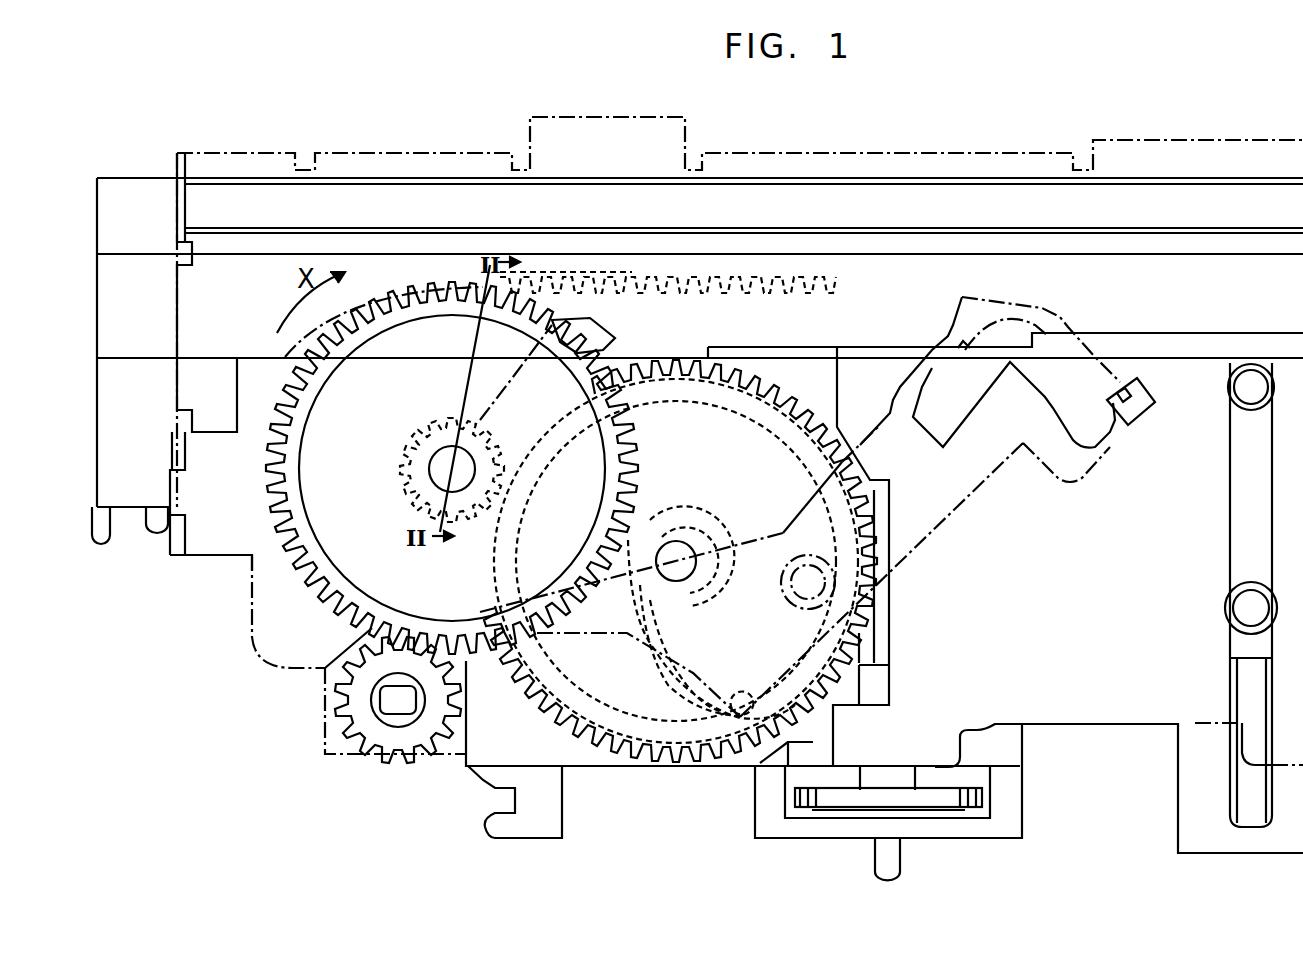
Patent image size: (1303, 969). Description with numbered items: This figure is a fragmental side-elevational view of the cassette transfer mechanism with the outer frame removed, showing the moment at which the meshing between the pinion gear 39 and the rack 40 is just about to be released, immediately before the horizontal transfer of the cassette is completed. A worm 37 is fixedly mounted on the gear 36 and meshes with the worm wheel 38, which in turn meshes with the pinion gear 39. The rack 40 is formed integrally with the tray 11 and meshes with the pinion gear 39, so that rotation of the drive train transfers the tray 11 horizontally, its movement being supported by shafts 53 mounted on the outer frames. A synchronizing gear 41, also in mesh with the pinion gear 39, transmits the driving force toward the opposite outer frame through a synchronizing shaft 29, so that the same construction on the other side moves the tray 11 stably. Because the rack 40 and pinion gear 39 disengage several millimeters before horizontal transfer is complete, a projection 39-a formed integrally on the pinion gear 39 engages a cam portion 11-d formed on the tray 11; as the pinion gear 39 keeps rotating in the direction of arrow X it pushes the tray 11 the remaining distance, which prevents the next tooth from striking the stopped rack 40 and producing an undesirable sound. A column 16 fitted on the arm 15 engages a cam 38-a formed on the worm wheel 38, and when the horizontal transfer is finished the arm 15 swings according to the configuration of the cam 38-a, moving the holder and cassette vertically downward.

The tray 11 is at (139, 177).
The cam portion 11-d is at (513, 325).
The arm 15 is at (942, 530).
The column 16 is at (743, 712).
The synchronizing shaft 29 is at (368, 703).
The gear 36 is at (948, 800).
The worm 37 is at (885, 638).
The worm wheel 38 is at (625, 730).
The cam 38-a is at (680, 695).
The pinion gear 39 is at (437, 283).
The projection 39-a is at (482, 425).
The rack 40 is at (745, 272).
The synchronizing gear 41 is at (362, 742).
The shaft 53 is at (1135, 178).